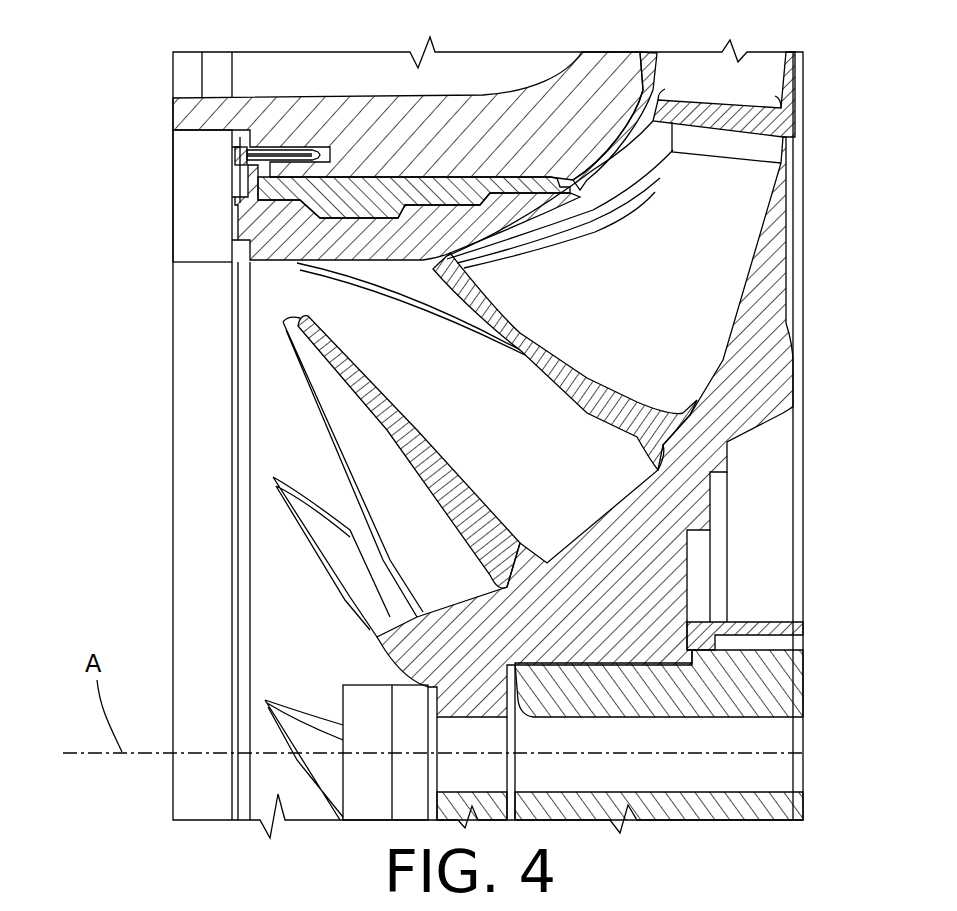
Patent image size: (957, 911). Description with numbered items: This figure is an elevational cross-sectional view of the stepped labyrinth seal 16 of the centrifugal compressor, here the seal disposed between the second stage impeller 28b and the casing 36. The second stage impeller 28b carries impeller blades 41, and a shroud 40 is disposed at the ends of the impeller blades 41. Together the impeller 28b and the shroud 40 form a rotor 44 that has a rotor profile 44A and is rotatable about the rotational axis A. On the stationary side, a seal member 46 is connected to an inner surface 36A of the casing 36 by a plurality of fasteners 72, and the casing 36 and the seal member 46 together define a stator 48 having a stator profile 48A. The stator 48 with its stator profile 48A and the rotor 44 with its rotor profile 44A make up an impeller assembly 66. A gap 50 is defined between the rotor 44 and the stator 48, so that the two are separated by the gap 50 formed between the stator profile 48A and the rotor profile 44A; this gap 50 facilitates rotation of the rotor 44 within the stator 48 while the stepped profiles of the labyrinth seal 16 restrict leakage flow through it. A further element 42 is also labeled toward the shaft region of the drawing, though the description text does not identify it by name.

The labyrinth seal 16 is at (224, 214).
The second stage impeller 28b is at (786, 260).
The casing 36 is at (483, 93).
The inner surface 36A is at (242, 242).
The shroud 40 is at (515, 207).
The impeller blades 41 is at (700, 276).
The seal element 42 is at (757, 652).
The rotor 44 is at (248, 385).
The rotor profile 44A is at (510, 173).
The seal member 46 is at (375, 176).
The stator 48 is at (173, 118).
The stator profile 48A is at (283, 261).
The gap 50 is at (368, 227).
The impeller assembly 66 is at (806, 411).
The fasteners 72 is at (290, 149).